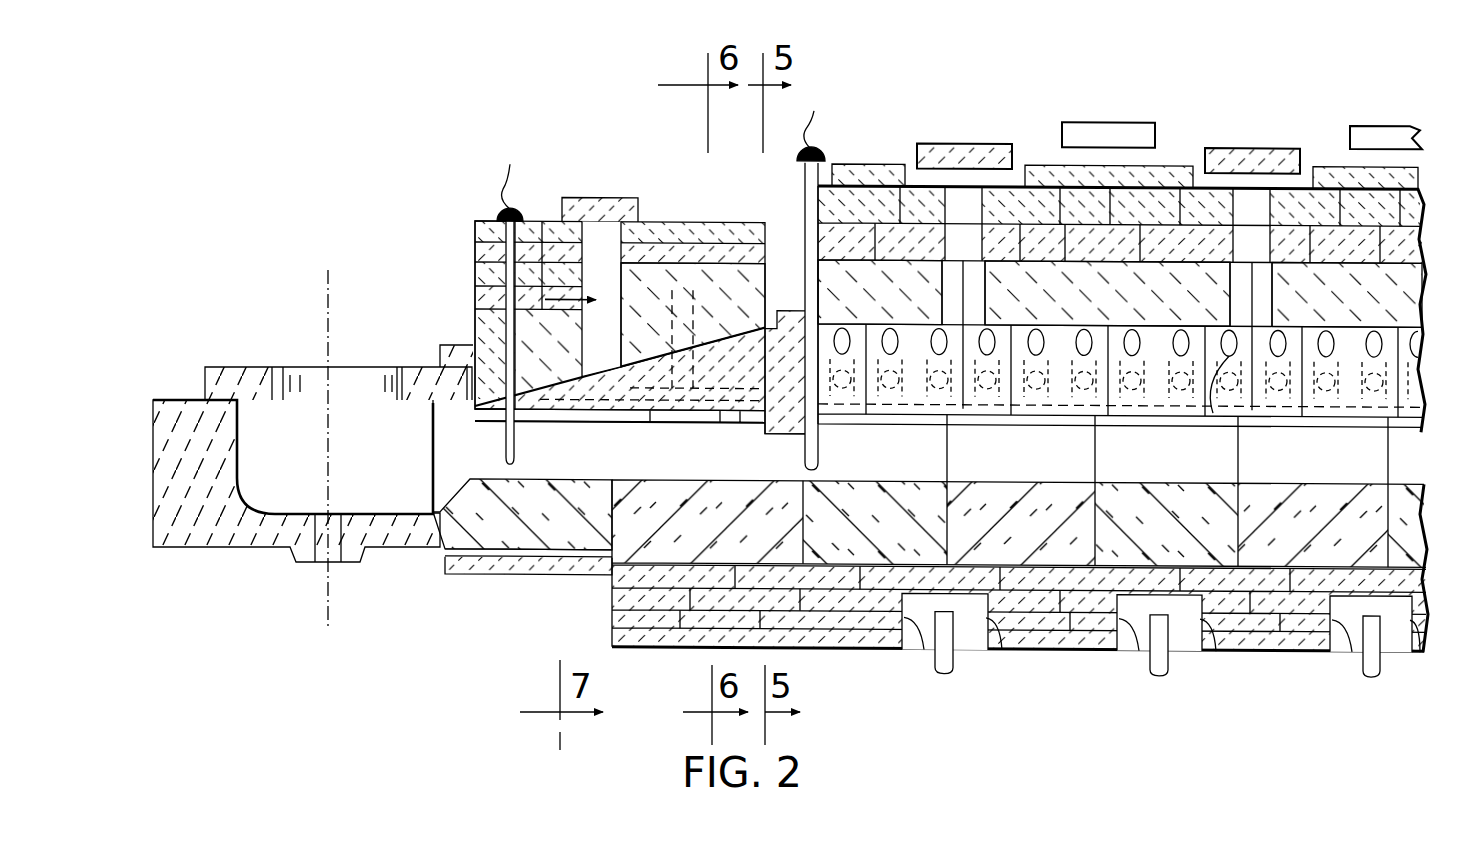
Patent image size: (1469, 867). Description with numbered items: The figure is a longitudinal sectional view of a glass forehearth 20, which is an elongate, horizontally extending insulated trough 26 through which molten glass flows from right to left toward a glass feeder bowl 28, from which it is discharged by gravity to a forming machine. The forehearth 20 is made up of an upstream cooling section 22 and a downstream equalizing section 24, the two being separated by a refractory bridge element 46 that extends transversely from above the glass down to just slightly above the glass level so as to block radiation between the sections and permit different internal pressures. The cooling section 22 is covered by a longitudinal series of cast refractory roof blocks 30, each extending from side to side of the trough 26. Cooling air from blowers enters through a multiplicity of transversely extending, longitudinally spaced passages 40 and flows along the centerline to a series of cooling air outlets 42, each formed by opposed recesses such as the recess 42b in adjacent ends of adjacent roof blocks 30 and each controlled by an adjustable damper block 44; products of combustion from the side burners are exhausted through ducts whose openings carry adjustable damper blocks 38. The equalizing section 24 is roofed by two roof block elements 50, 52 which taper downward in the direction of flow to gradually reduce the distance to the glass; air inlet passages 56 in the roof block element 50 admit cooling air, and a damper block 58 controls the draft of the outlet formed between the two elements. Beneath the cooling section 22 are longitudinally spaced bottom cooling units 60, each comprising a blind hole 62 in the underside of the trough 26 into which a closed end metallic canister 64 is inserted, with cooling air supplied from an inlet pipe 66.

The forehearth 20 is at (958, 86).
The cooling section 22 is at (1183, 140).
The equalizing section 24 is at (590, 181).
The insulated trough 26 is at (1410, 533).
The glass feeder bowl 28 is at (262, 541).
The roof block 30 is at (935, 304).
The adjustable damper block 38 is at (1115, 124).
The passage 40 is at (848, 355).
The cooling air outlet 42 is at (1040, 390).
The recess 42b is at (1256, 410).
The adjustable damper block 44 is at (947, 141).
The refractory bridge element 46 is at (772, 432).
The roof block element 50 is at (638, 280).
The roof block element 52 is at (470, 330).
The air inlet passage 56 is at (690, 408).
The damper block 58 is at (563, 199).
The bottom cooling unit 60 is at (906, 657).
The blind hole 62 is at (997, 652).
The closed end metallic canister 64 is at (922, 650).
The inlet pipe 66 is at (967, 652).